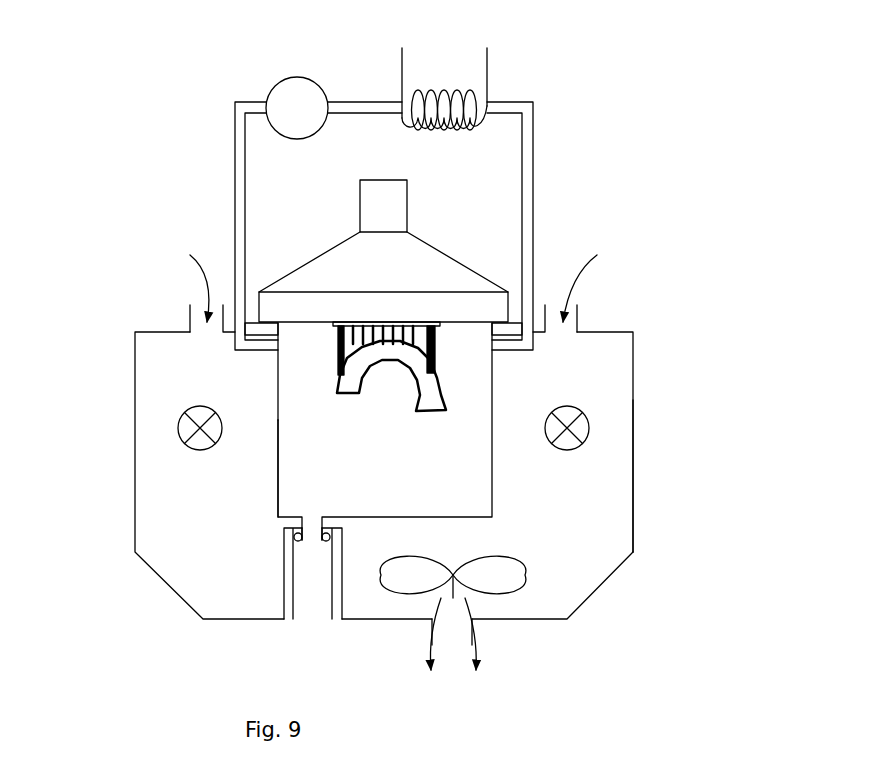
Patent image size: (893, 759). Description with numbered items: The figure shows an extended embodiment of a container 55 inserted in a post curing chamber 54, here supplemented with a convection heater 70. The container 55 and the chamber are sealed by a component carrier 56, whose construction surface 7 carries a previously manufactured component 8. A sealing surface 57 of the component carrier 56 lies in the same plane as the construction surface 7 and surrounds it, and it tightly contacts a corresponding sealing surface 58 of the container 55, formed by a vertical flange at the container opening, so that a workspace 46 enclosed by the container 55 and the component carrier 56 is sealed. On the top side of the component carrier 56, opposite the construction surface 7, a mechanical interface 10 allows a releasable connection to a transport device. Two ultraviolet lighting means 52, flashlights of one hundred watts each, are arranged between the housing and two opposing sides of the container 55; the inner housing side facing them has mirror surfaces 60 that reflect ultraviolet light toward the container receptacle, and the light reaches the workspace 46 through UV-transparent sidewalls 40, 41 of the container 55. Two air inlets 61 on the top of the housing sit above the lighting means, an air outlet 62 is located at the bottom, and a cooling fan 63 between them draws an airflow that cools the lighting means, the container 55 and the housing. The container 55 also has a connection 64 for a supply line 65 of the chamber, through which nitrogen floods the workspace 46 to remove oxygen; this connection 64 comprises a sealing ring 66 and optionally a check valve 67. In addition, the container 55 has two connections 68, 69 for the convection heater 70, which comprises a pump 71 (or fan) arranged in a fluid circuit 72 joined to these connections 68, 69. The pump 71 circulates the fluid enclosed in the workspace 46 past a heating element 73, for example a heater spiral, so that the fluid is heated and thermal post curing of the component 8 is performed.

The convection heater 70 is at (186, 108).
The pump 71 is at (309, 120).
The fluid circuit 72 is at (534, 200).
The heating element 73 is at (492, 72).
The mechanical interface 10 is at (380, 207).
The sealing surface 57 is at (272, 323).
The component carrier 56 is at (510, 302).
The sealing surface 58 is at (275, 330).
The connection 68 is at (492, 346).
The connection 69 is at (277, 343).
The air inlet 61 is at (580, 320).
The post curing chamber 54 is at (635, 357).
The mirror surface 60 is at (635, 532).
The workspace 46 is at (395, 485).
The container 55 is at (277, 410).
The sidewall 40 is at (277, 480).
The sidewall 41 is at (492, 396).
The construction surface 7 is at (318, 330).
The component 8 is at (425, 395).
The ultraviolet lighting means 52 is at (590, 422).
The sealing ring 66 is at (294, 542).
The supply line 65 is at (333, 575).
The check valve 67 is at (308, 537).
The connection 64 is at (311, 533).
The air outlet 62 is at (473, 636).
The cooling fan 63 is at (522, 583).